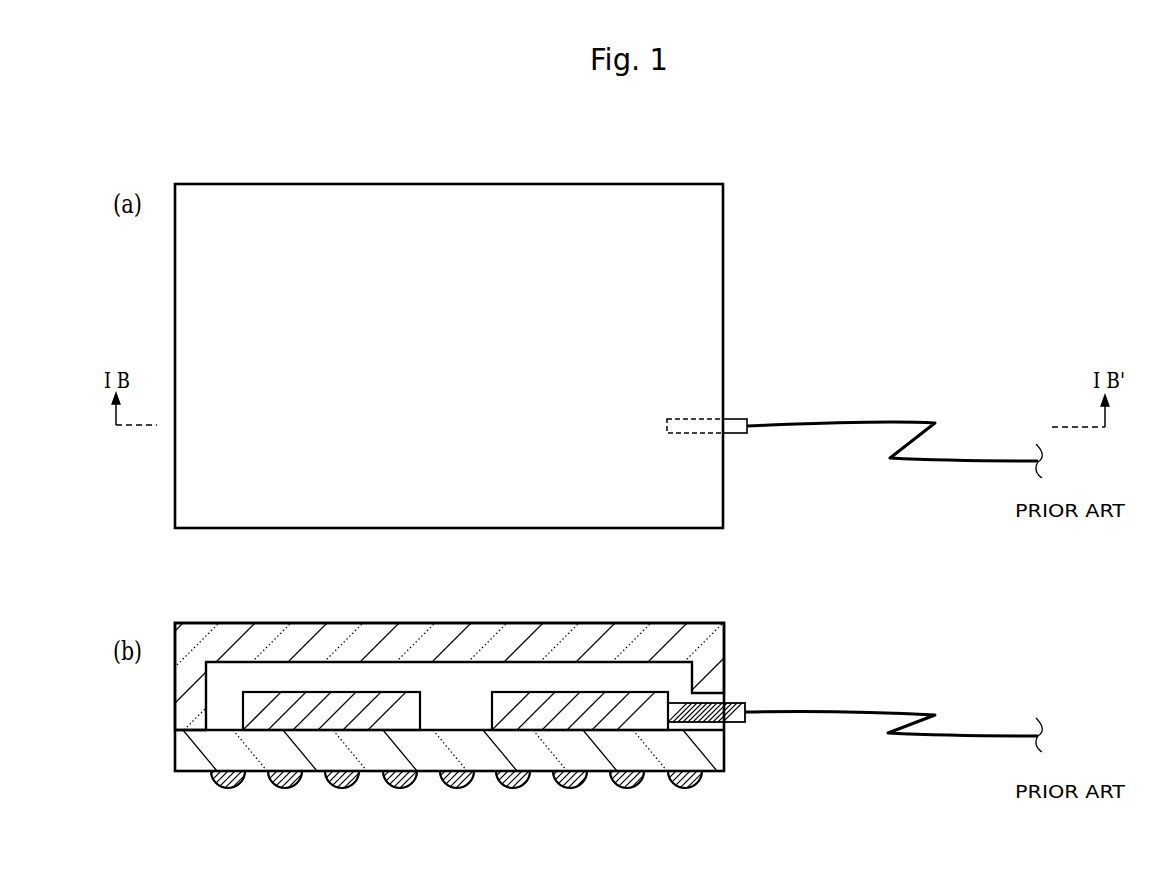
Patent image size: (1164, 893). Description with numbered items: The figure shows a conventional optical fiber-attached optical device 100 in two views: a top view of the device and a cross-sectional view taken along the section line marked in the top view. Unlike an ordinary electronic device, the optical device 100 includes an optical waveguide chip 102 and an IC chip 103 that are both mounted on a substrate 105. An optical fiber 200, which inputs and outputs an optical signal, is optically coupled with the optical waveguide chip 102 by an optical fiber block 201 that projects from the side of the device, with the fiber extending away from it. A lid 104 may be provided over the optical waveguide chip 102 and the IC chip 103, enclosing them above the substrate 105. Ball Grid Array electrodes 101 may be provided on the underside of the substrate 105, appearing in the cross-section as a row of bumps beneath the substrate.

The optical device 100 is at (762, 190).
The Ball Grid Array electrodes 101 is at (225, 789).
The optical waveguide chip 102 is at (574, 702).
The IC chip 103 is at (338, 702).
The lid 104 is at (452, 646).
The substrate 105 is at (724, 748).
The optical fiber 200 is at (913, 421).
The optical fiber block 201 is at (735, 419).